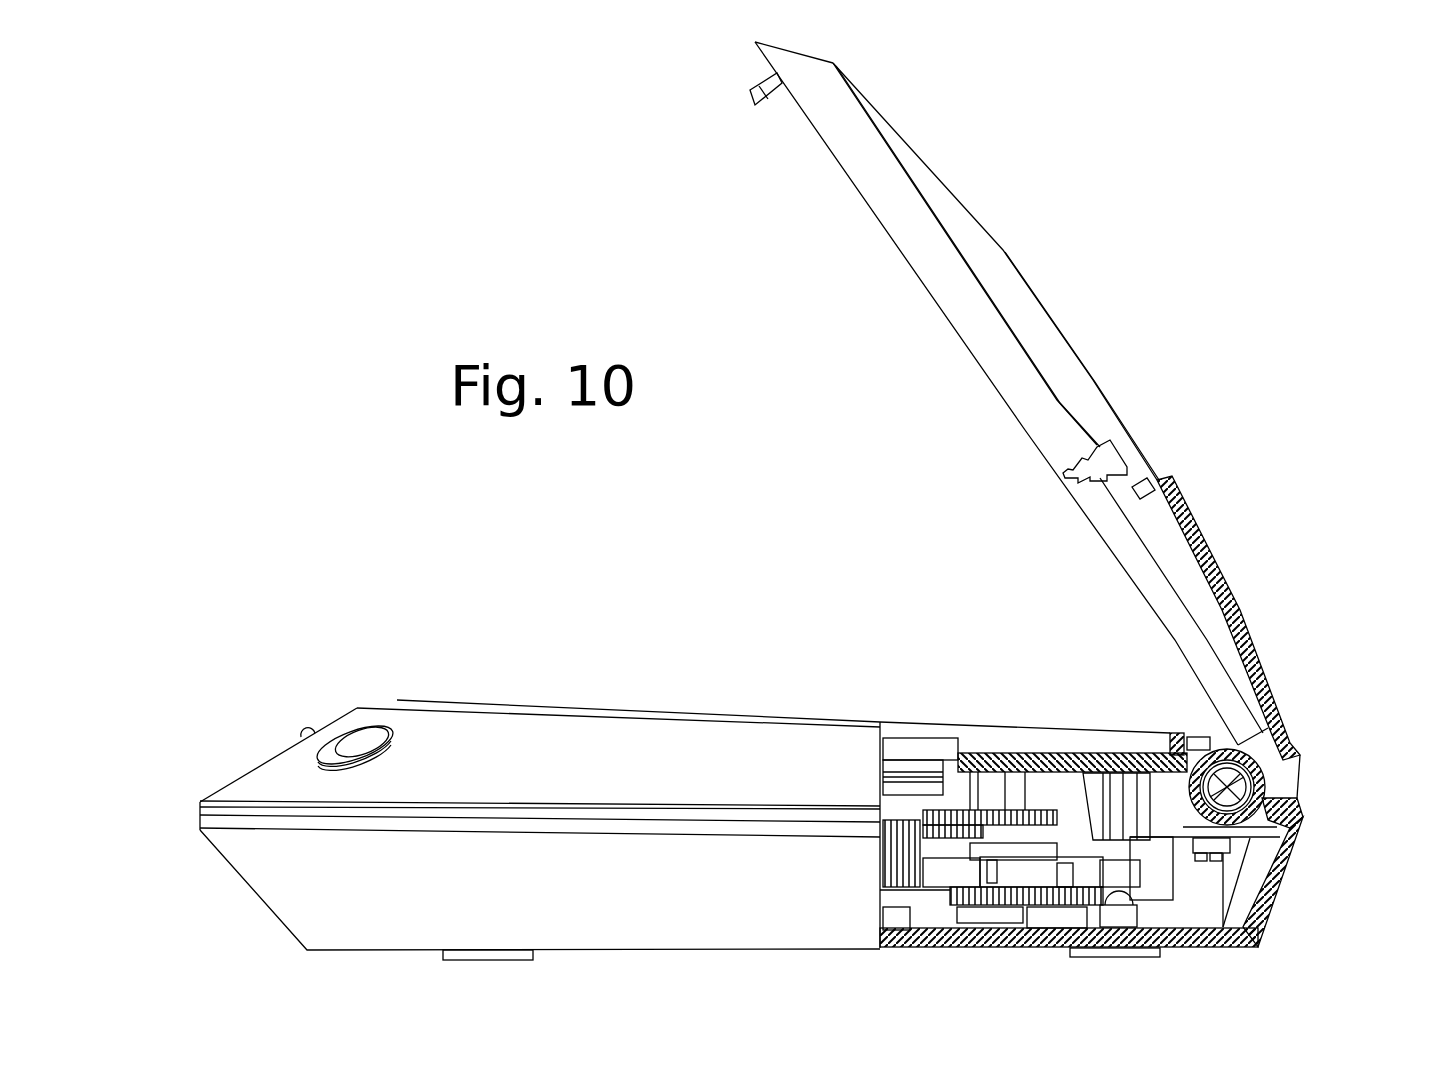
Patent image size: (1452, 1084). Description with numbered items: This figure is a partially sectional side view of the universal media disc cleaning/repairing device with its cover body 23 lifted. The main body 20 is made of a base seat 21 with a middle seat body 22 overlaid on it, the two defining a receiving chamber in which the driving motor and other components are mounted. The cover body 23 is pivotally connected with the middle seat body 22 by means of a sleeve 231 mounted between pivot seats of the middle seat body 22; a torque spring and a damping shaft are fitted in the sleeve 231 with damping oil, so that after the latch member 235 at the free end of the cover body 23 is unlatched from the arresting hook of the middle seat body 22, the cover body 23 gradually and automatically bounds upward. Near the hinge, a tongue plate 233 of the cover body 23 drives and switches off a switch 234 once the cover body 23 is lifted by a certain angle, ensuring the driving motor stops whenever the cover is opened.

The main body 20 is at (262, 762).
The base seat 21 is at (280, 873).
The middle seat body 22 is at (548, 740).
The cover body 23 is at (1047, 327).
The sleeve 231 is at (1262, 790).
The tongue plate 233 is at (1138, 757).
The switch 234 is at (1235, 856).
The latch member 235 is at (753, 97).